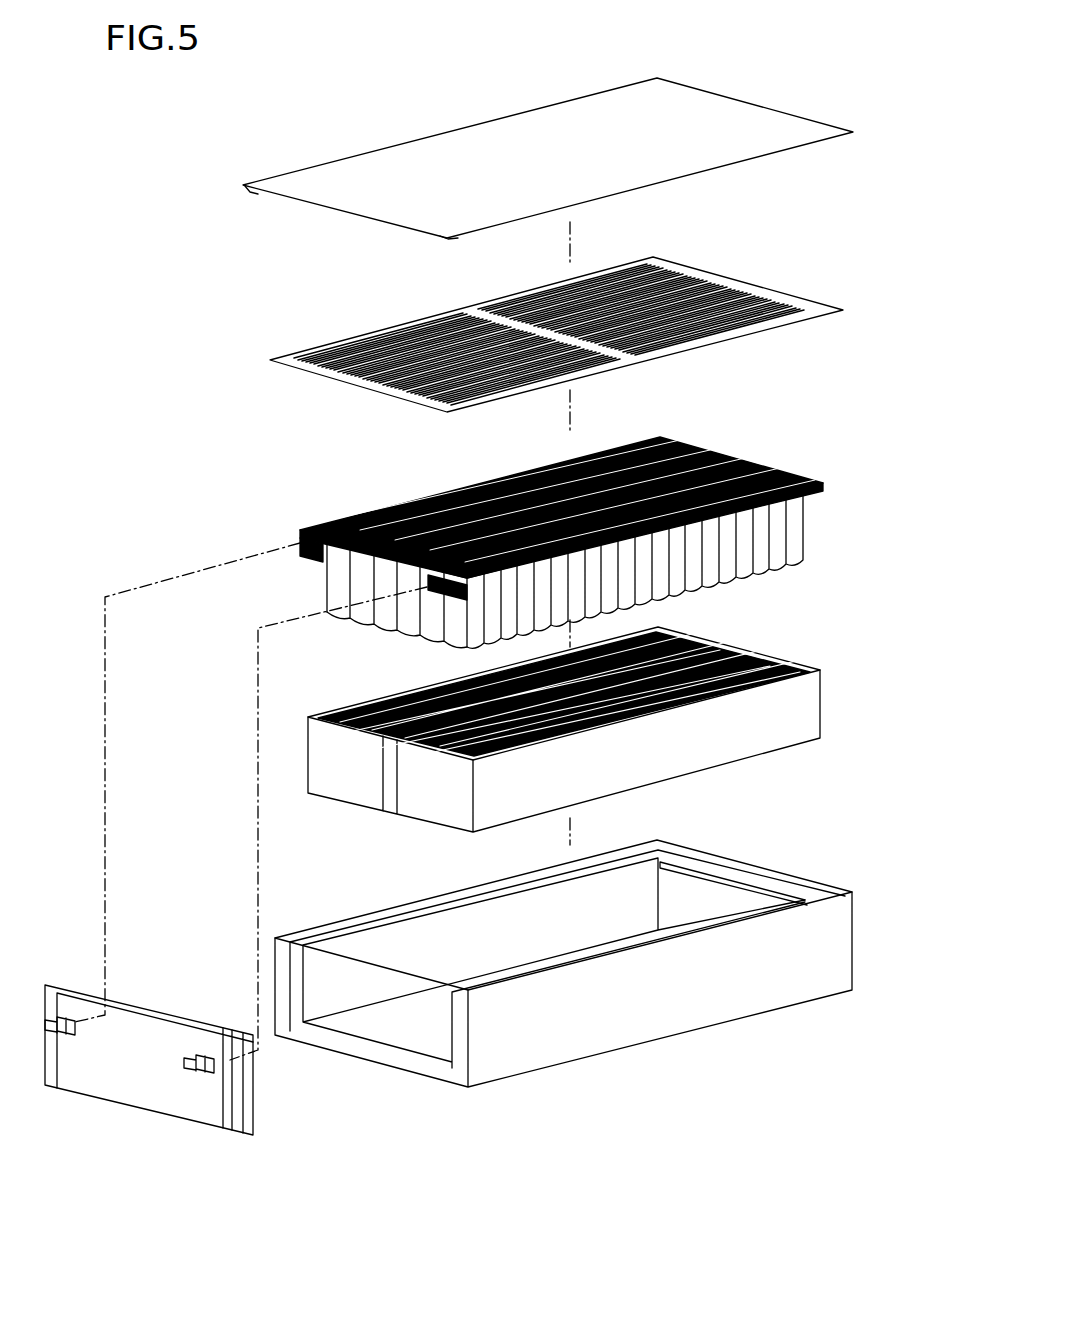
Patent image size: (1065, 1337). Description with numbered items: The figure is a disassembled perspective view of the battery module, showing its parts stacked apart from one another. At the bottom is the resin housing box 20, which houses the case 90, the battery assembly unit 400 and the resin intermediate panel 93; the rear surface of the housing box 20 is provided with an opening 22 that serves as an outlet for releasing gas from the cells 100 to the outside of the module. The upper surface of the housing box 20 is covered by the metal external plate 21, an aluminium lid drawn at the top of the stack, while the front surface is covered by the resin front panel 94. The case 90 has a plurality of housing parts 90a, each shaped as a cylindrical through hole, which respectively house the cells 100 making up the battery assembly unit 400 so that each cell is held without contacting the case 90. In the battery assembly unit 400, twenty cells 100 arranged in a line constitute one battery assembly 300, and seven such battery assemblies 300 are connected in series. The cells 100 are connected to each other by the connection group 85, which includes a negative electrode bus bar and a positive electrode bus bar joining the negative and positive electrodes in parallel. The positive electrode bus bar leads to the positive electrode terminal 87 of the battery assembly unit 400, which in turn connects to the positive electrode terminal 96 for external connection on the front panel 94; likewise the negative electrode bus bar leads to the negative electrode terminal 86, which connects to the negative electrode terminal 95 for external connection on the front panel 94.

The external plate 21 is at (773, 108).
The intermediate panel 93 is at (770, 285).
The battery assembly unit 400 is at (782, 438).
The connection group 85 is at (729, 458).
The cell 100 is at (800, 527).
The battery assembly 300 is at (320, 577).
The negative electrode terminal 86 is at (298, 538).
The positive electrode terminal 87 is at (439, 590).
The case 90 is at (598, 711).
The housing part 90a is at (747, 657).
The housing box 20 is at (563, 938).
The opening 22 is at (732, 878).
The front panel 94 is at (149, 1067).
The negative electrode terminal for external connection 95 is at (63, 1017).
The positive electrode terminal for external connection 96 is at (203, 1053).